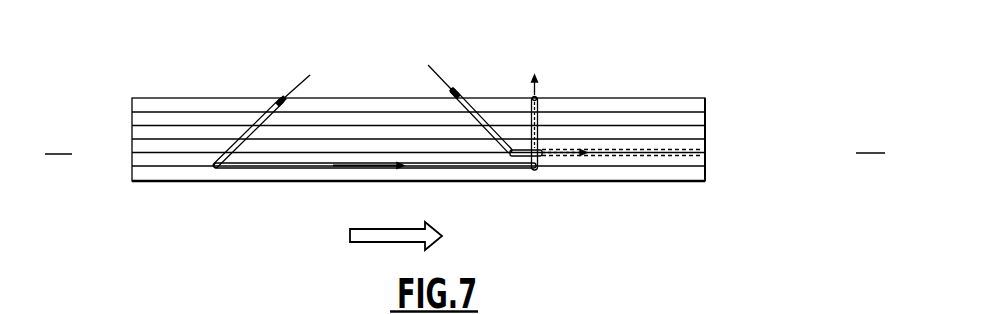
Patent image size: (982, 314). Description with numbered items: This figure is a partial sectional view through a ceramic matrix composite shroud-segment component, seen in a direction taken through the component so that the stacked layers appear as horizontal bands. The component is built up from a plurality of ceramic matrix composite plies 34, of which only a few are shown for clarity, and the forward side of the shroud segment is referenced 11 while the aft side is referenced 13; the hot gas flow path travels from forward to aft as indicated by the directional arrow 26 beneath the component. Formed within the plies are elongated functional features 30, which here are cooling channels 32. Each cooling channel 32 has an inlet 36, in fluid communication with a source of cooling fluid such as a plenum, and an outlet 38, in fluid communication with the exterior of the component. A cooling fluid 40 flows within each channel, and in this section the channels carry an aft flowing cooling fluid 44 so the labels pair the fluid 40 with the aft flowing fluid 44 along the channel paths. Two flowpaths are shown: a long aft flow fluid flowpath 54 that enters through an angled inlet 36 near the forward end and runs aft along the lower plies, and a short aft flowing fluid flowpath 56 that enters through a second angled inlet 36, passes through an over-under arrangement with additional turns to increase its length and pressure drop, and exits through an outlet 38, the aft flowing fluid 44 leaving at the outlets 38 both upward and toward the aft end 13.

The forward of the shroud segment 11 is at (58, 141).
The aft of the shroud segment 13 is at (870, 140).
The directional arrow 26 is at (392, 227).
The elongated functional features 30 is at (423, 119).
The cooling channels 32 is at (487, 115).
The ceramic matrix composite (CMC) plies 34 is at (704, 117).
The inlet 36 is at (278, 92).
The outlet 38 is at (546, 84).
The cooling fluid 40 is at (532, 124).
The aft flowing cooling fluid 44 is at (294, 88).
The long aft flow fluid flowpath 54 is at (242, 170).
The short aft flowing fluid flowpath 56 is at (502, 130).